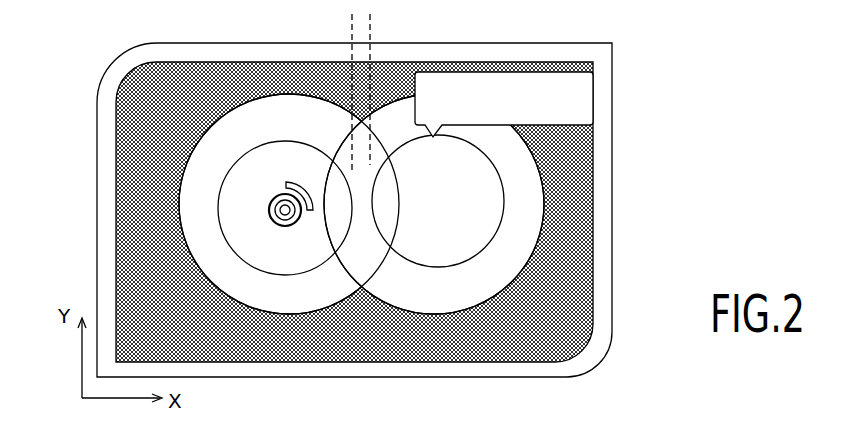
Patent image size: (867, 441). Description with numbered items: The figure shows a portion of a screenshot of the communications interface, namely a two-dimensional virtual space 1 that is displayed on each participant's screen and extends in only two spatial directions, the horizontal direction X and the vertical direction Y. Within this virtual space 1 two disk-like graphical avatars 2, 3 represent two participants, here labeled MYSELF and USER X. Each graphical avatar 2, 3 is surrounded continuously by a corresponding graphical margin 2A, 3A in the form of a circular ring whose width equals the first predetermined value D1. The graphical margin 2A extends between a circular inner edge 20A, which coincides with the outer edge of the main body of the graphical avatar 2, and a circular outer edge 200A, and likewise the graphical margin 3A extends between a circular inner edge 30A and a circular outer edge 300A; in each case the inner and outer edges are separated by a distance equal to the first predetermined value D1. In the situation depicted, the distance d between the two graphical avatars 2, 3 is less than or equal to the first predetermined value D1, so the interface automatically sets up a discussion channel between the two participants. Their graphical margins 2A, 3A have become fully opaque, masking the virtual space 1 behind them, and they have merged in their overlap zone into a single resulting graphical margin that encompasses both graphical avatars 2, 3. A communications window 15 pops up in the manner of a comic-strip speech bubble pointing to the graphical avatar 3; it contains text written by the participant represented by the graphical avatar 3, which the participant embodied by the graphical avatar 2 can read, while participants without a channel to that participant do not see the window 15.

The virtual space 1 is at (218, 83).
The graphical avatar 2 is at (290, 150).
The graphical margin 2A is at (205, 160).
The circular inner edge 20A is at (263, 143).
The circular outer edge 200A is at (173, 202).
The graphical avatar 3 is at (440, 250).
The graphical margin 3A is at (527, 215).
The circular inner edge 30A is at (477, 258).
The circular outer edge 300A is at (540, 170).
The communications window 15 is at (523, 72).
The distance between graphical avatars d is at (337, 26).
The first predetermined value D1 is at (238, 258).